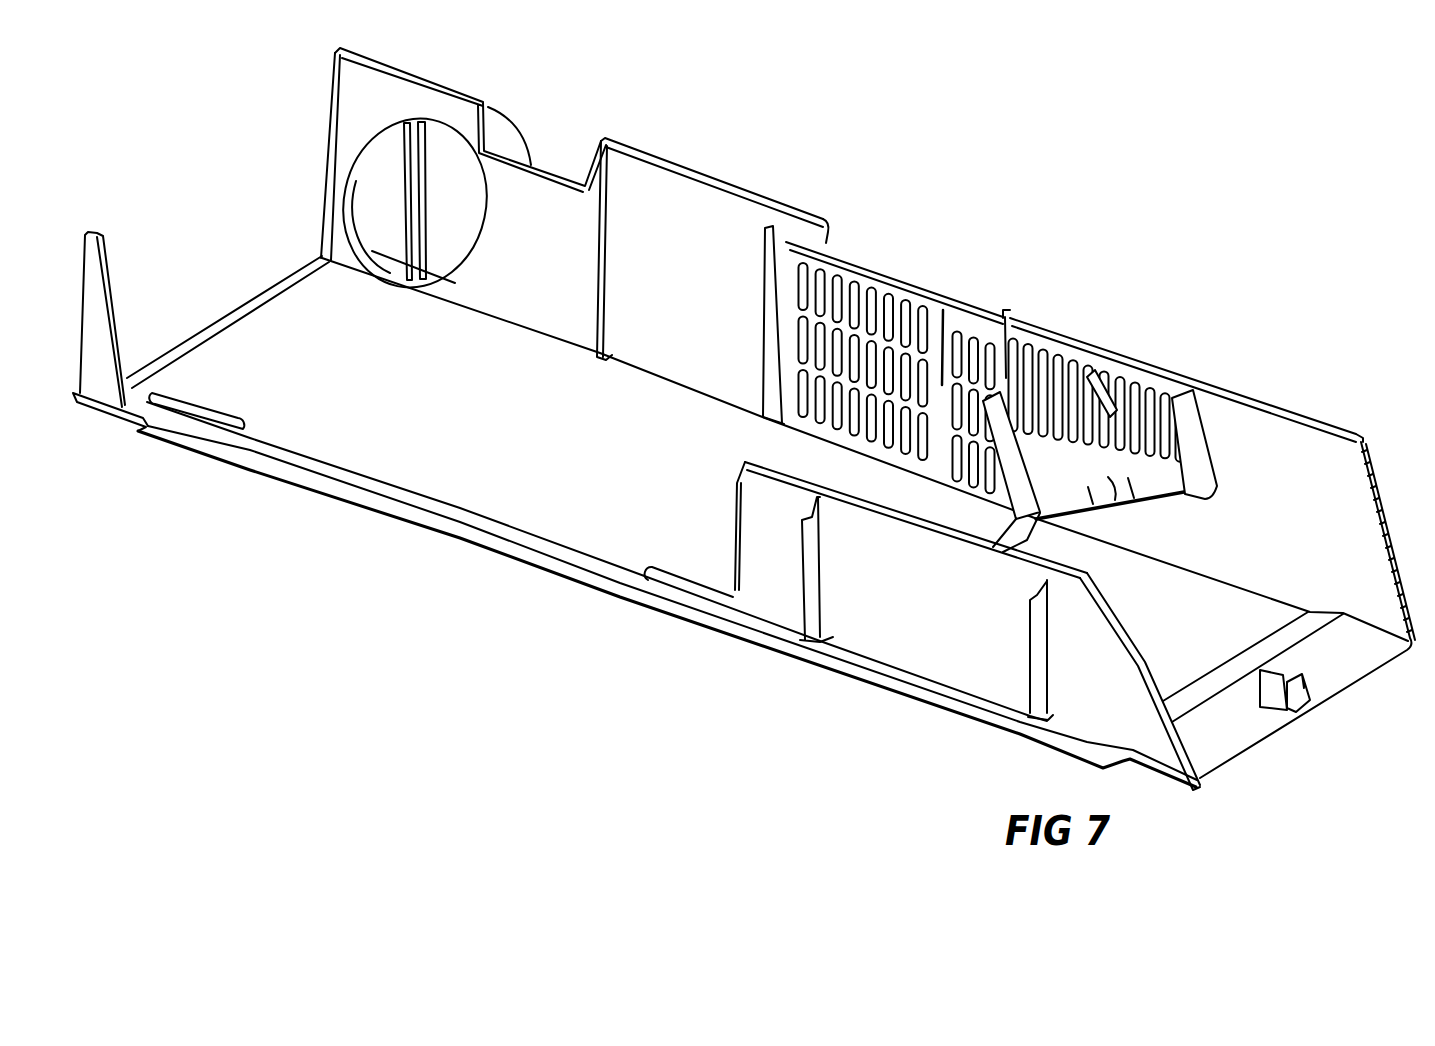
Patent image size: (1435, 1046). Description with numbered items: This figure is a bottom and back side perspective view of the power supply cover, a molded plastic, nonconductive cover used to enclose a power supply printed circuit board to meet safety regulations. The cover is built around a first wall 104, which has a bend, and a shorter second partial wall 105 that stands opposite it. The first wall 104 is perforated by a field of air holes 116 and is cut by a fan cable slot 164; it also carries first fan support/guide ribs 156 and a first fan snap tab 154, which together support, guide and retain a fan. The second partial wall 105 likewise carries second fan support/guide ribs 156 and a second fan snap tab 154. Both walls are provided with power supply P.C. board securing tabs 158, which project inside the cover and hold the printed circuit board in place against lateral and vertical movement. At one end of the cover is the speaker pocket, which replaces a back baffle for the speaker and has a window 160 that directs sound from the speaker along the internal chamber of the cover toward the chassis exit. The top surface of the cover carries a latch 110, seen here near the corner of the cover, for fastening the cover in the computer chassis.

The first wall 104 is at (1315, 447).
The second partial wall 105 is at (925, 643).
The latch 110 is at (1303, 677).
The air holes 116 is at (888, 290).
The fan snap tab 154 is at (1105, 378).
The fan support/guide ribs 156 is at (1100, 471).
The power supply P.C. board securing tabs 158 is at (93, 232).
The window 160 is at (489, 240).
The fan cable slot 164 is at (1007, 313).